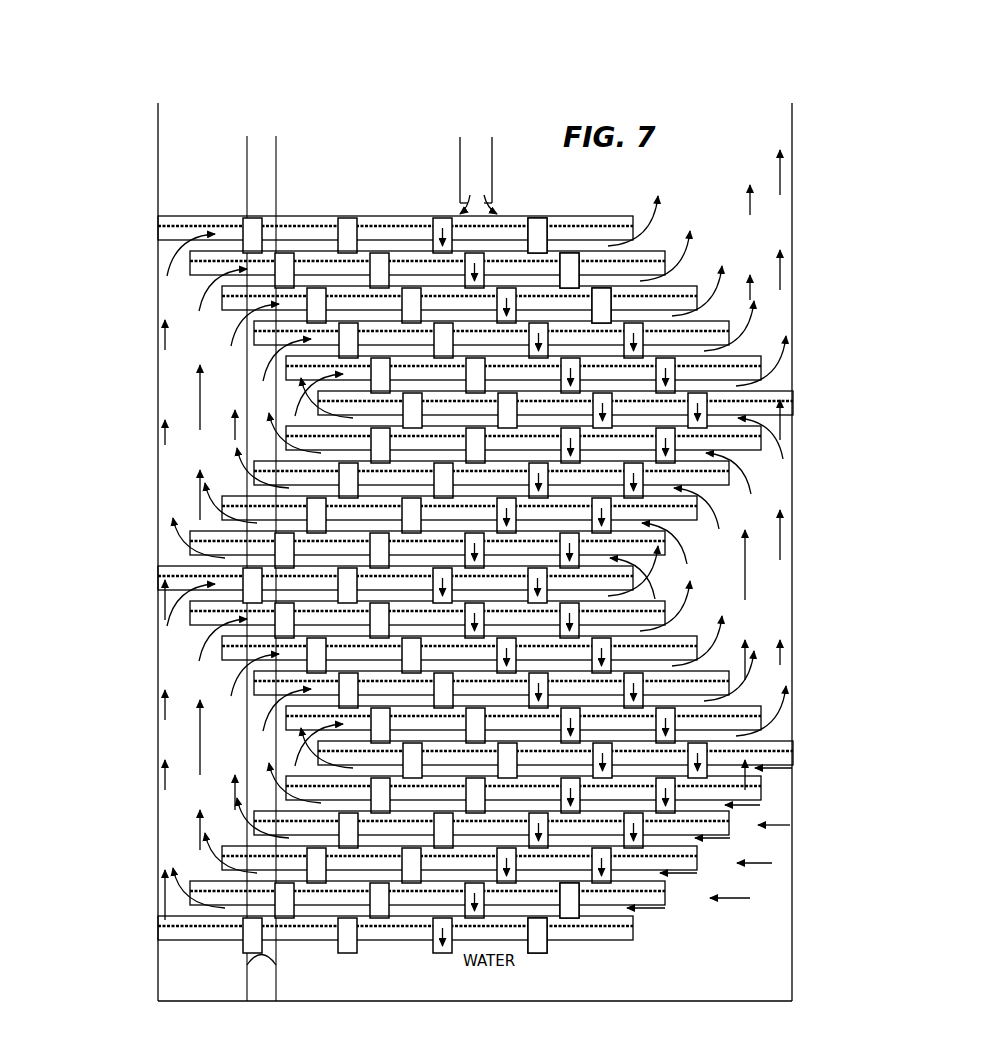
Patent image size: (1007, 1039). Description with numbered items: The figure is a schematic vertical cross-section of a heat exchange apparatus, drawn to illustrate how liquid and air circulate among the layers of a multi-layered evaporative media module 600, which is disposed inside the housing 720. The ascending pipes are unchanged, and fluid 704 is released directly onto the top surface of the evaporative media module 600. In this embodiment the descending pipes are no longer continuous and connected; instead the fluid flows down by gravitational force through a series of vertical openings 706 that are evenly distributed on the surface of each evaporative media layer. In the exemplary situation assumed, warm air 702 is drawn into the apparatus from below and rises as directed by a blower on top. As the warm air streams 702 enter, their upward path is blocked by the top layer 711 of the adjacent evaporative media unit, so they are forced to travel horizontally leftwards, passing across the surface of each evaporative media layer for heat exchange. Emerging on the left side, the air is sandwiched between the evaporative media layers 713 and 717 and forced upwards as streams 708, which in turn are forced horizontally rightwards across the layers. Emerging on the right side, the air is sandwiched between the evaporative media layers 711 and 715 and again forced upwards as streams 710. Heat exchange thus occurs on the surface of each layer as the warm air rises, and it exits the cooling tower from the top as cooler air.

The evaporative media module 600 is at (370, 198).
The warm air streams 702 is at (732, 900).
The fluid 704 is at (479, 156).
The vertical openings 706 is at (607, 312).
The air streams 708 is at (235, 807).
The air streams 710 is at (770, 645).
The top layer 711 is at (772, 747).
The evaporative media layer 713 is at (178, 570).
The evaporative media layer 715 is at (772, 391).
The evaporative media layer 717 is at (178, 925).
The housing 720 is at (788, 122).